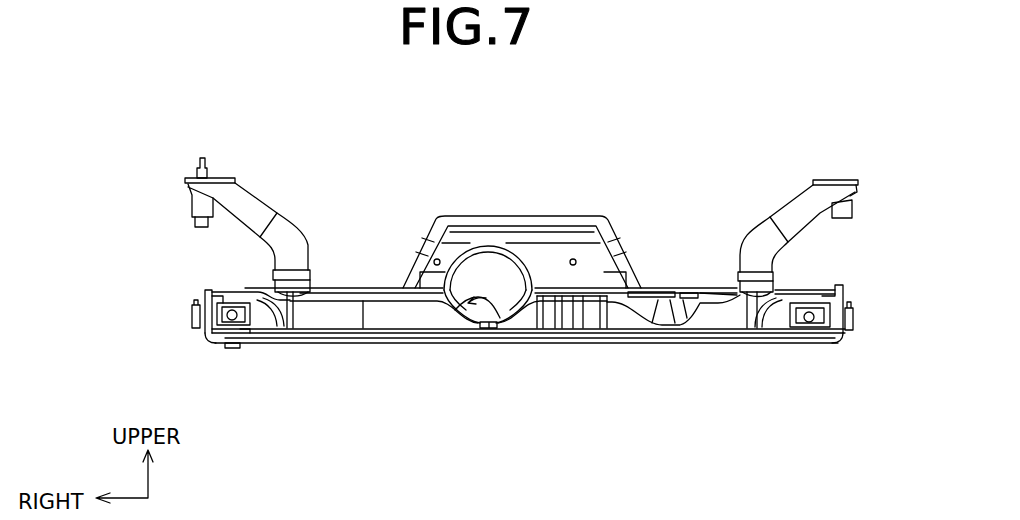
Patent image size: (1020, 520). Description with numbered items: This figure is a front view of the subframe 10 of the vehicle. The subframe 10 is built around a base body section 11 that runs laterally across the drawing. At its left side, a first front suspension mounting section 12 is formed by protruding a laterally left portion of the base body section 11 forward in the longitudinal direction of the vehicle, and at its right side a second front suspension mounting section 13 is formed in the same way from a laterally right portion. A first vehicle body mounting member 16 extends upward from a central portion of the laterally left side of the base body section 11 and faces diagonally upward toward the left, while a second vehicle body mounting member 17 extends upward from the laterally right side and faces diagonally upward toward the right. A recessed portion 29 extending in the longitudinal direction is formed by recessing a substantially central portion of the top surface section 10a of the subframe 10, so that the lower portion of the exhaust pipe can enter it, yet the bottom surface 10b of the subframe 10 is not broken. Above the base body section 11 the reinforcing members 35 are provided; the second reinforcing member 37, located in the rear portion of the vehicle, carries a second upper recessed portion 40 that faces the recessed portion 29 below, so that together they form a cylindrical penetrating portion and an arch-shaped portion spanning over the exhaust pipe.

The subframe 10 is at (803, 136).
The top surface section 10a is at (688, 281).
The bottom surface 10b is at (692, 353).
The base body section 11 is at (621, 318).
The first front suspension mounting section 12 is at (825, 316).
The second front suspension mounting section 13 is at (230, 316).
The first vehicle body mounting member 16 is at (825, 210).
The second vehicle body mounting member 17 is at (250, 213).
The recessed portion 29 is at (500, 318).
The reinforcing members 35 is at (623, 196).
The second reinforcing member 37 is at (545, 230).
The second upper recessed portion 40 is at (498, 259).